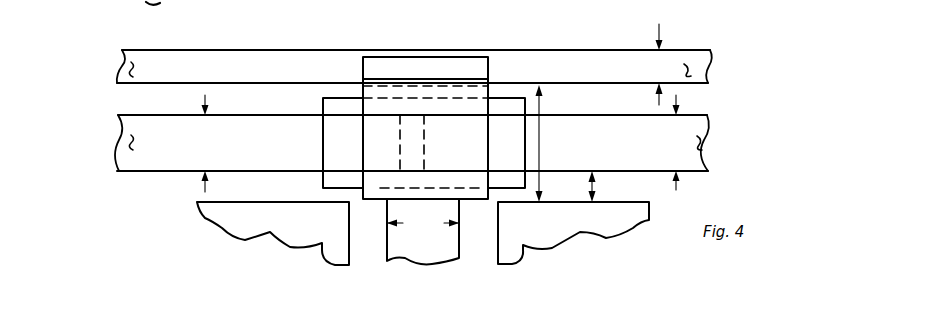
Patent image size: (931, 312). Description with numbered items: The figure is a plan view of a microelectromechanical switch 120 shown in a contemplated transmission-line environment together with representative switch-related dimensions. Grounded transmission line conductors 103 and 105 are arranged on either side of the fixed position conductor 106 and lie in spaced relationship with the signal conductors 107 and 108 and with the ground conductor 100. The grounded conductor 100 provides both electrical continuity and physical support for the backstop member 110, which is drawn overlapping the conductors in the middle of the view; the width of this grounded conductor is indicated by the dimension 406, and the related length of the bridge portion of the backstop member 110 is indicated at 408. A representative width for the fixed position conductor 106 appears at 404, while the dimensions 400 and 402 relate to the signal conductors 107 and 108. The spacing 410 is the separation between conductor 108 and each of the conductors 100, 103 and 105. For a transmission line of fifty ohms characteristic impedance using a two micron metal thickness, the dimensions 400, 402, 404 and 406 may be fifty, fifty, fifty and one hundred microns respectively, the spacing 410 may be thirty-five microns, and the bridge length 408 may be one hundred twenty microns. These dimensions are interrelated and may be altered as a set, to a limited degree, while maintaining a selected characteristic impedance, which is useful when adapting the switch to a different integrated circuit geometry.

The ground conductor 100 is at (122, 63).
The signal conductor 108 is at (122, 138).
The signal conductor 107 is at (706, 136).
The backstop member 110 is at (436, 106).
The connector assembly 120 is at (334, 30).
The grounded transmission line conductor 103 is at (234, 224).
The grounded transmission line conductor 105 is at (605, 215).
The fixed position conductor 106 is at (418, 246).
The dimension 400 is at (207, 100).
The dimension 402 is at (678, 97).
The dimension 404 is at (423, 223).
The width dimension 406 is at (659, 30).
The length dimension 408 is at (541, 108).
The spacing 410 is at (595, 191).